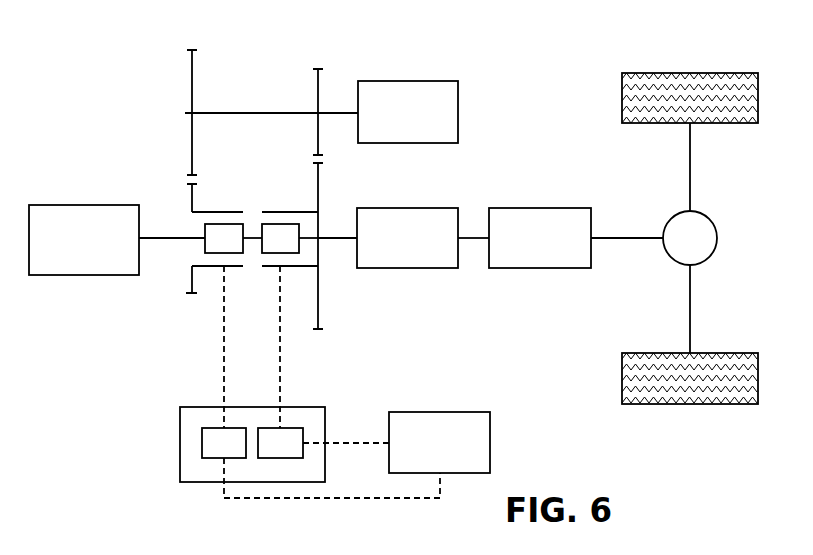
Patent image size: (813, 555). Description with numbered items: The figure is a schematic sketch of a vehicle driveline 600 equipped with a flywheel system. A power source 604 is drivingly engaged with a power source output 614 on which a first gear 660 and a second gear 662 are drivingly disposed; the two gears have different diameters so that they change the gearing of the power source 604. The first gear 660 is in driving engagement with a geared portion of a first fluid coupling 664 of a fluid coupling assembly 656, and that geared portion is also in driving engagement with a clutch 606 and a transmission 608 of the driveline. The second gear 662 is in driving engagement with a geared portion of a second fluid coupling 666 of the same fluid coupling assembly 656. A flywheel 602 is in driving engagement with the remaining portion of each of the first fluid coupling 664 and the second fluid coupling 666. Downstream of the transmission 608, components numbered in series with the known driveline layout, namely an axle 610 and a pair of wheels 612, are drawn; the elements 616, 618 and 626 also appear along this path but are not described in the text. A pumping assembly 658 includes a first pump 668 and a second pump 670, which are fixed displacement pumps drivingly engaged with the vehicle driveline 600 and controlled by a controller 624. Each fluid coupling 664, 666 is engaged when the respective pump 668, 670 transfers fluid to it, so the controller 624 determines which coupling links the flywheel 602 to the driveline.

The vehicle driveline 600 is at (96, 100).
The flywheel 602 is at (82, 205).
The power source 604 is at (408, 81).
The clutch 606 is at (407, 208).
The transmission 608 is at (540, 208).
The axle 610 is at (690, 307).
The wheels 612 is at (690, 73).
The power source output 614 is at (335, 112).
The output shaft 616 is at (471, 236).
The drive shaft 618 is at (612, 236).
The controller 624 is at (438, 412).
The differential 626 is at (632, 236).
The fluid coupling assembly 656 is at (140, 338).
The pumping assembly 658 is at (168, 442).
The first gear 660 is at (317, 85).
The second gear 662 is at (192, 142).
The first fluid coupling 664 is at (280, 212).
The second fluid coupling 666 is at (222, 212).
The first pump 668 is at (298, 428).
The second pump 670 is at (212, 428).